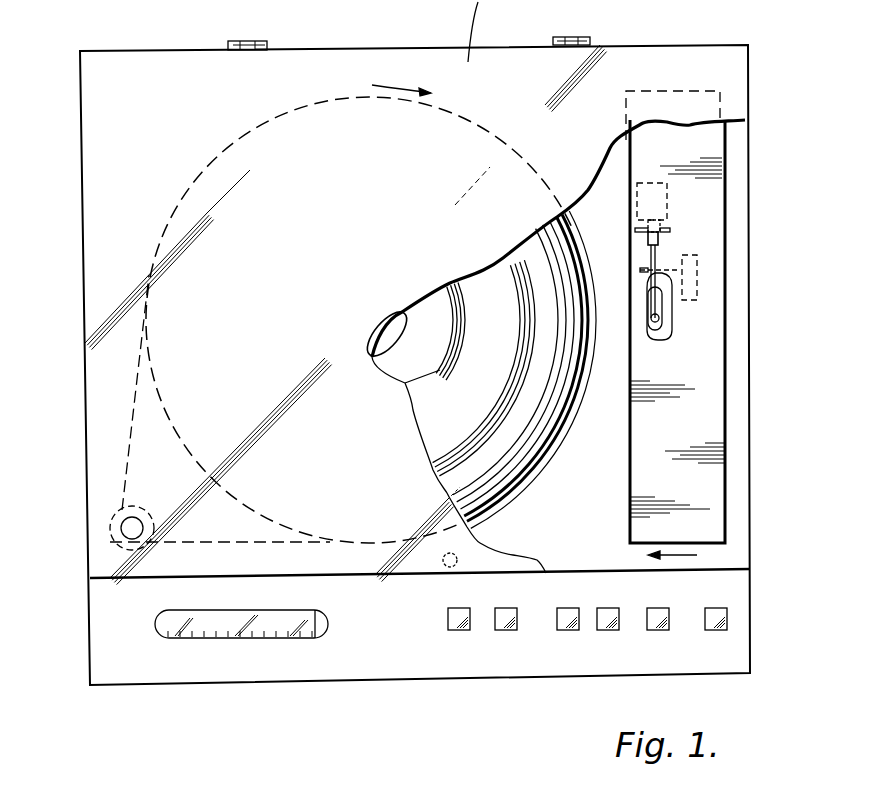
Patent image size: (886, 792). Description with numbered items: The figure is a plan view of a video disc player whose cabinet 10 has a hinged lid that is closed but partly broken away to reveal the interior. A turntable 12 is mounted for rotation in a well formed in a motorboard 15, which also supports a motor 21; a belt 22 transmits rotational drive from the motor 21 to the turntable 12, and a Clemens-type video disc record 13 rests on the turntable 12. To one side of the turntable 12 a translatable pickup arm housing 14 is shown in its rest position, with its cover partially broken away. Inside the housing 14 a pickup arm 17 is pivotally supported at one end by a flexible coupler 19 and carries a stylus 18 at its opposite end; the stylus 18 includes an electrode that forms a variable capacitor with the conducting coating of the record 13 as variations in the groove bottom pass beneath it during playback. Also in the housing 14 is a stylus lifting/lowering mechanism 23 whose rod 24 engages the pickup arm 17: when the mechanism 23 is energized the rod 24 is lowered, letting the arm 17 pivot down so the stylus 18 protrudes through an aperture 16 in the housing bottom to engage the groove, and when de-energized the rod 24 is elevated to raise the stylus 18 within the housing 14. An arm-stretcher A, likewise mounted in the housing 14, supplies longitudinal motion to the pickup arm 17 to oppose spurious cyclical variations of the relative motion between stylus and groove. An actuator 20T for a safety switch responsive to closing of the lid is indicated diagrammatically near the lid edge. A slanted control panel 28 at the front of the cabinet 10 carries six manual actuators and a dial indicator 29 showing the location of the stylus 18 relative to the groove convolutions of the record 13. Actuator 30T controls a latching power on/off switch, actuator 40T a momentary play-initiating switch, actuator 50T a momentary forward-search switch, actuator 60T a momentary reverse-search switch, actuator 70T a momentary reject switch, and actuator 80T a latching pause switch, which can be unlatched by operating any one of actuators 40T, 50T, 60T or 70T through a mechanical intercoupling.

The cabinet 10 is at (750, 373).
The turntable 12 is at (502, 493).
The video disc record 13 is at (513, 413).
The pickup arm housing 14 is at (725, 478).
The motorboard 15 is at (607, 548).
The aperture 16 is at (646, 339).
The pickup arm 17 is at (657, 258).
The stylus 18 is at (652, 317).
The flexible coupler 19 is at (648, 240).
The actuator 20T is at (443, 567).
The motor 21 is at (110, 527).
The belt 22 is at (133, 430).
The stylus lifting/lowering mechanism 23 is at (700, 282).
The rod 24 is at (640, 270).
The control panel 28 is at (98, 641).
The indicator window 29 is at (156, 623).
The actuator 30T is at (728, 618).
The actuator 40T is at (658, 631).
The actuator 50T is at (459, 631).
The actuator 60T is at (506, 631).
The actuator 70T is at (568, 631).
The actuator 80T is at (608, 631).
The arm-stretcher A is at (647, 181).